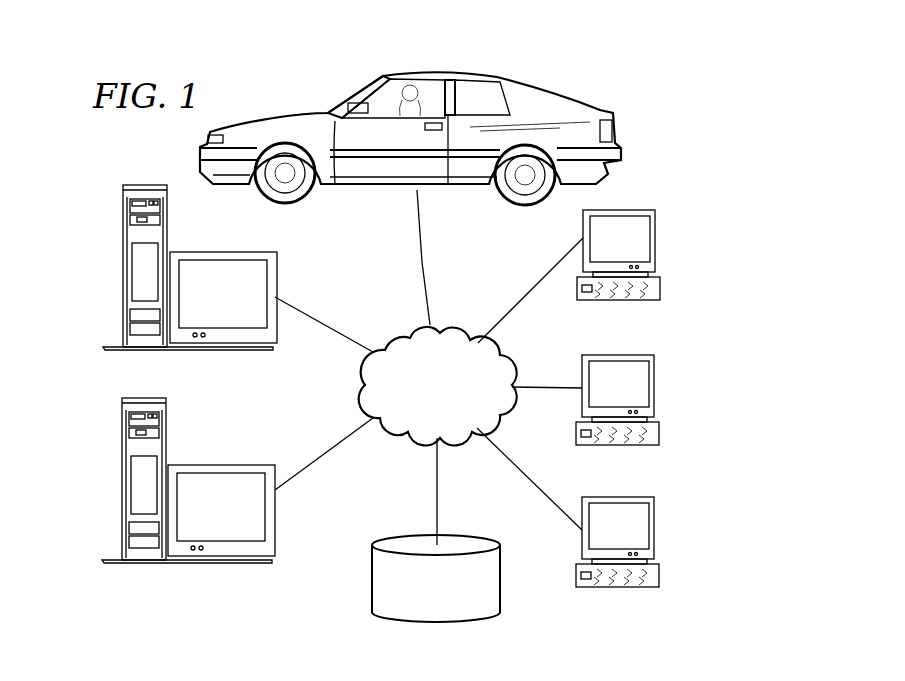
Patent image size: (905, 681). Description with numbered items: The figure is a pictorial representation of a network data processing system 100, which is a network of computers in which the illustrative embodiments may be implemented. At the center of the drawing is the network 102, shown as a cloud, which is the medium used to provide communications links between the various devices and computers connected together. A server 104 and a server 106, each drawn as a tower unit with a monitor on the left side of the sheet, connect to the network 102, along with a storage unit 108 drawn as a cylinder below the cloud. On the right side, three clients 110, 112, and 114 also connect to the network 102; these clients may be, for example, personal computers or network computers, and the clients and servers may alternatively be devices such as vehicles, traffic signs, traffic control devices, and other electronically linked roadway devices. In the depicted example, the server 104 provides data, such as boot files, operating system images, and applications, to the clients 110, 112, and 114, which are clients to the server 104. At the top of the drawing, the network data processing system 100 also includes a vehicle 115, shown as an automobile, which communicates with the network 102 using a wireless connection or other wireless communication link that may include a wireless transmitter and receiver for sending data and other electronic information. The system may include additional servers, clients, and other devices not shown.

The network data processing system 100 is at (663, 87).
The network 102 is at (407, 437).
The server 104 is at (123, 268).
The server 106 is at (122, 483).
The storage unit 108 is at (420, 623).
The client 110 is at (655, 240).
The client 112 is at (655, 385).
The client 114 is at (653, 530).
The vehicle 115 is at (278, 109).